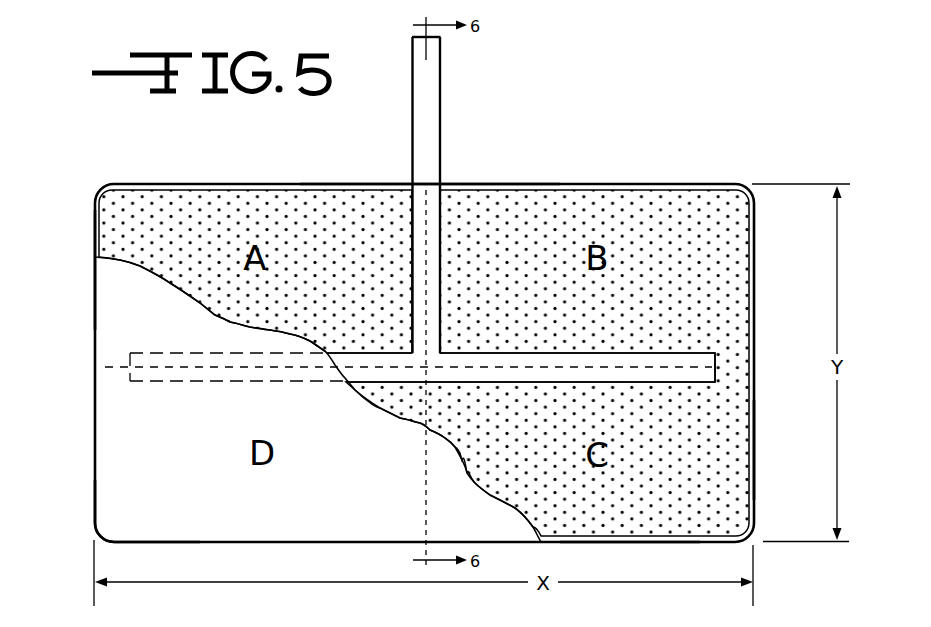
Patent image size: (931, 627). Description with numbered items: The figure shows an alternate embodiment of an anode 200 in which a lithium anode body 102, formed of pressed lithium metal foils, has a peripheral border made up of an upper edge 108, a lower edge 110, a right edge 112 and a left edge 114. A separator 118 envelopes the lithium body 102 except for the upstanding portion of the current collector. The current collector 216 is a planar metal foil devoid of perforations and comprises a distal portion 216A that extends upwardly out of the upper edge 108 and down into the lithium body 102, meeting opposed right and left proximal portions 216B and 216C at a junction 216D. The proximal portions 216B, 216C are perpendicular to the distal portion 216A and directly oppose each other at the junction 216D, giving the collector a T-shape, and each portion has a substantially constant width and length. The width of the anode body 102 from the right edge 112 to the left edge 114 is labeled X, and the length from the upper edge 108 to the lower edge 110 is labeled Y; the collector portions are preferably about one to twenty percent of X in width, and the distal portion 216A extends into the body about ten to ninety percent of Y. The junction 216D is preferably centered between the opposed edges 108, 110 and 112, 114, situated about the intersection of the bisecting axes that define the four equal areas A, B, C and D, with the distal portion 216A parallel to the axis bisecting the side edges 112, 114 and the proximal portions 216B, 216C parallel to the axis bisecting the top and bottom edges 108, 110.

The anode 200 is at (686, 125).
The anode body 102 is at (723, 277).
The upper edge 108 is at (565, 185).
The lower edge 110 is at (615, 543).
The right edge 112 is at (753, 455).
The left edge 114 is at (95, 232).
The separator 118 is at (122, 498).
The current collector 216 is at (425, 139).
The distal portion 216A is at (430, 94).
The right proximal portion 216B is at (703, 358).
The left proximal portion 216C is at (155, 352).
The junction 216D is at (432, 370).